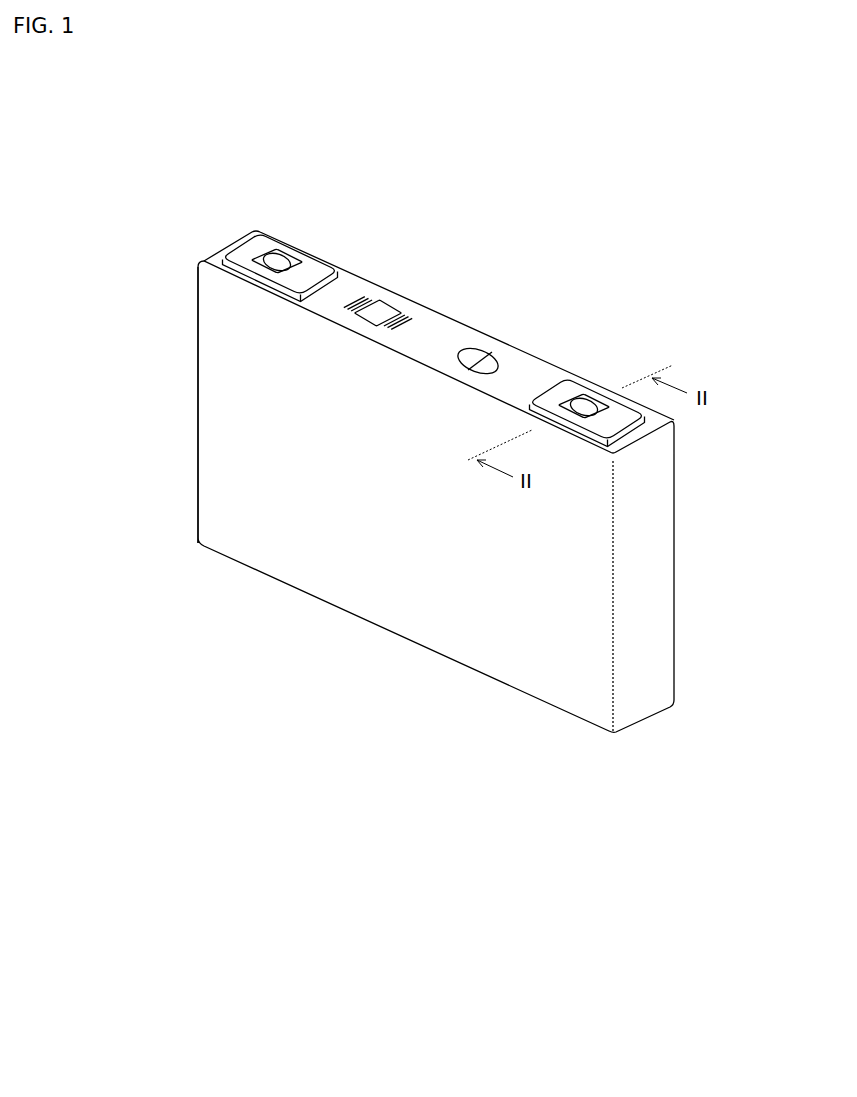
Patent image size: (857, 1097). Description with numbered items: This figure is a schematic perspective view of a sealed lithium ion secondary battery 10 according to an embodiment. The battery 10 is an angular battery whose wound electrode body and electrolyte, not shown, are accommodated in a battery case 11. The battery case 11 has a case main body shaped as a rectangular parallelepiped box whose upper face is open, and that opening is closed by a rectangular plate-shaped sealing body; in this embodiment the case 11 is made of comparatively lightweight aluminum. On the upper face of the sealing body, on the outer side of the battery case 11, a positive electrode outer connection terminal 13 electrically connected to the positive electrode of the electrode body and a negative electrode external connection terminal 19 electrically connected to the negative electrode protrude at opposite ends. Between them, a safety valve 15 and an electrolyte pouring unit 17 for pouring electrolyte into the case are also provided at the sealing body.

The lithium ion secondary battery 10 is at (660, 214).
The battery case 11 is at (303, 542).
The positive electrode outer connection terminal 13 is at (588, 385).
The safety valve 15 is at (481, 348).
The electrolyte pouring unit 17 is at (392, 307).
The negative electrode external connection terminal 19 is at (292, 240).